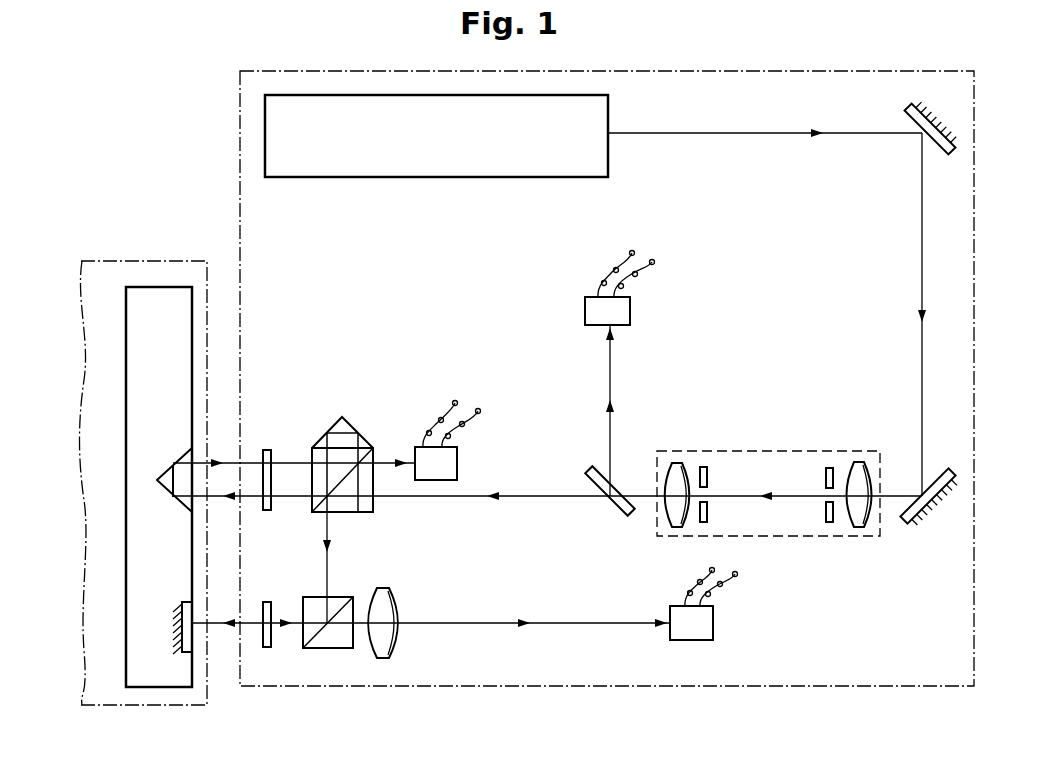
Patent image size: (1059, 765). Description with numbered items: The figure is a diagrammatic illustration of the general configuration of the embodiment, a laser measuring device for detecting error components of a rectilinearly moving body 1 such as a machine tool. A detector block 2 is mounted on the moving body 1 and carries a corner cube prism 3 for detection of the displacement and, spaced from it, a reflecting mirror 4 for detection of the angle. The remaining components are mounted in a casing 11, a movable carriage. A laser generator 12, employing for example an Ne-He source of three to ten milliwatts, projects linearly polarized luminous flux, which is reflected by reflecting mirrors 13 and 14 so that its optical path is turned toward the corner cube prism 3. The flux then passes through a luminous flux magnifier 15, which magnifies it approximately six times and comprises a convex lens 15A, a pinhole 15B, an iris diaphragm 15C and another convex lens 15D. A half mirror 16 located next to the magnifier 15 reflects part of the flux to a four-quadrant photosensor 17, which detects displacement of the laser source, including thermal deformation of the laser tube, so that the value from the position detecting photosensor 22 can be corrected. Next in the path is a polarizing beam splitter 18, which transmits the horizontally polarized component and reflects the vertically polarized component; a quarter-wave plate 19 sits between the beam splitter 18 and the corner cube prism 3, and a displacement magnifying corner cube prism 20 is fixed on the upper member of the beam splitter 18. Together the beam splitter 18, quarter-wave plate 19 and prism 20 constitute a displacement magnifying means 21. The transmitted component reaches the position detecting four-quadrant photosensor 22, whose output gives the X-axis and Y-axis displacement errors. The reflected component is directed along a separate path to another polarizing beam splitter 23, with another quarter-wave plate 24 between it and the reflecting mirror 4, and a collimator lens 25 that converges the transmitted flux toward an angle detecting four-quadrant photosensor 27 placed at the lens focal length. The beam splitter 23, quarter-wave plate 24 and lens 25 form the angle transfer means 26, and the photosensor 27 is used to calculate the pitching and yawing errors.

The rectilinearly moving body 1 is at (102, 252).
The detector block 2 is at (140, 546).
The corner cube prism 3 is at (165, 492).
The reflecting mirror 4 is at (176, 634).
The casing 11 is at (978, 250).
The laser generator 12 is at (572, 178).
The reflecting mirror 13 is at (908, 112).
The reflecting mirror 14 is at (905, 525).
The luminous flux magnifier 15 is at (800, 448).
The convex lens 15A is at (858, 527).
The pinhole 15B is at (828, 522).
The iris diaphragm 15C is at (705, 465).
The convex lens 15D is at (672, 462).
The half mirror 16 is at (612, 505).
The 4-quadrant photosensor 17 is at (630, 314).
The polarizing beam splitter 18 is at (365, 505).
The quarter-wave plate 19 is at (268, 447).
The displacement magnifying corner cube prism 20 is at (345, 430).
The displacement magnifying means 21 is at (300, 515).
The position detecting 4-quadrant photosensor 22 is at (457, 463).
The polarizing beam splitter 23 is at (345, 650).
The quarter-wave plate 24 is at (268, 650).
The collimator lens 25 is at (385, 660).
The angle transfer means 26 is at (312, 662).
The angle detecting 4-quadrant photosensor 27 is at (713, 622).